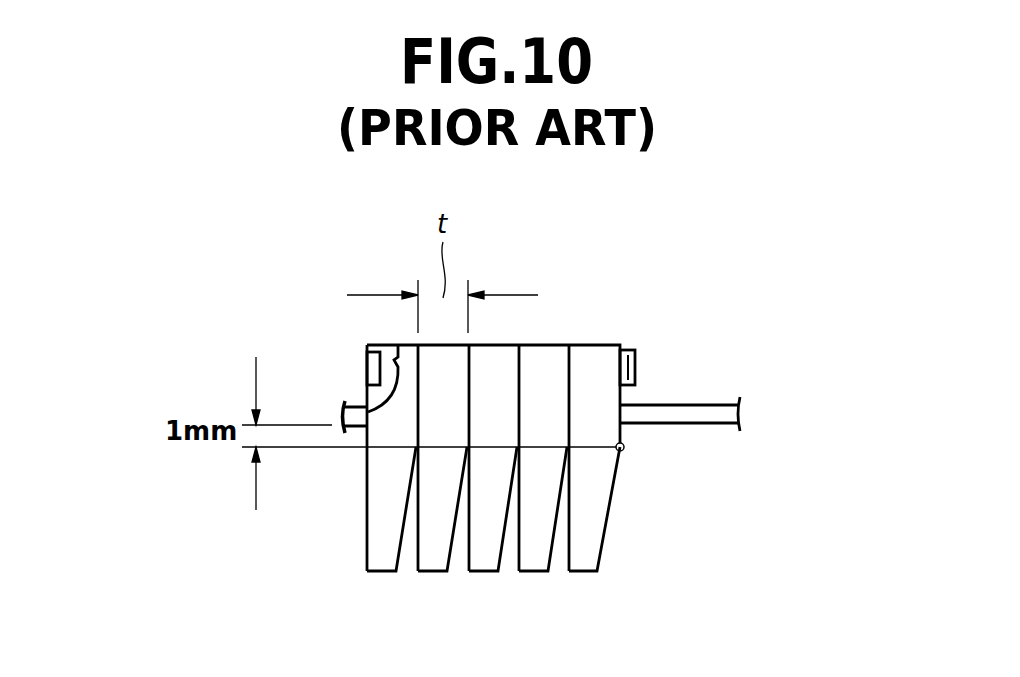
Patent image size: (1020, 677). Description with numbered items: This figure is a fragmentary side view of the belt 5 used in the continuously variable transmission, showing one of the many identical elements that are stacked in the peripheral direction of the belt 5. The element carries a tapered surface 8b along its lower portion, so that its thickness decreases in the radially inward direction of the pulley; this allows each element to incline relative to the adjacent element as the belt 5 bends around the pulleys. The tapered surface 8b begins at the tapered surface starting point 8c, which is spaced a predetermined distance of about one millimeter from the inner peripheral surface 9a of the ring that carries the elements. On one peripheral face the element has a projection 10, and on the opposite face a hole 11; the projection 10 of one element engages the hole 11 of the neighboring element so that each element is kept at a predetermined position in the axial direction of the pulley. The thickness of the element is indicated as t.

The belt 5 is at (760, 392).
The tapered surface 8b is at (608, 515).
The tapered surface starting point 8c is at (623, 450).
The inner peripheral surface 9a is at (690, 423).
The projection 10 is at (635, 368).
The hole 11 is at (368, 370).